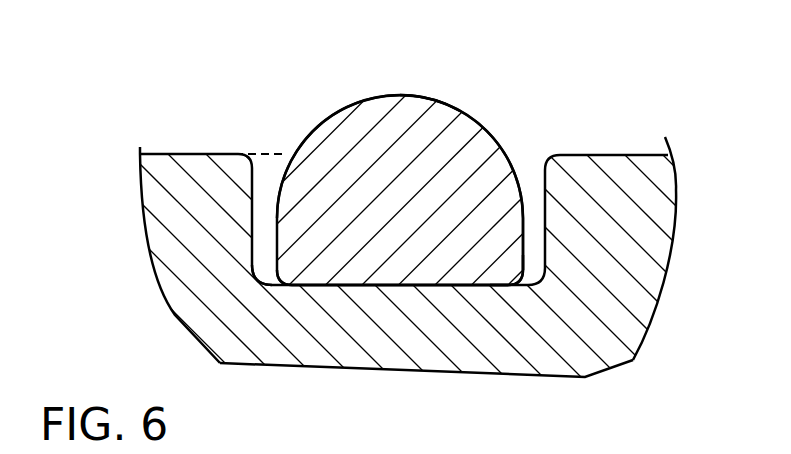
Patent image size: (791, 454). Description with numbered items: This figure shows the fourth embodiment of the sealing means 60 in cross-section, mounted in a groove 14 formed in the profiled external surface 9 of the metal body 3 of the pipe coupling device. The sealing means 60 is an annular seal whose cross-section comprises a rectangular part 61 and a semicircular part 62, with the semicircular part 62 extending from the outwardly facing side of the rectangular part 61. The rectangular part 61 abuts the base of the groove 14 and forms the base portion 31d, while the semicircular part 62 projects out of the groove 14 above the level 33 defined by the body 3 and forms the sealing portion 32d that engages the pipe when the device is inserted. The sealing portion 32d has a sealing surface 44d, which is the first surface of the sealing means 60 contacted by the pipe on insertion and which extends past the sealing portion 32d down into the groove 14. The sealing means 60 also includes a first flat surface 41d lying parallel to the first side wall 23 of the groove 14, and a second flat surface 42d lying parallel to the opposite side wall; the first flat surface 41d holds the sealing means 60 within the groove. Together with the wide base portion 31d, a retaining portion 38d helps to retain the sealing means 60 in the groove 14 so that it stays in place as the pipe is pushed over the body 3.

The body 3 is at (658, 211).
The profiled external surface 9 is at (595, 155).
The groove 14 is at (252, 284).
The first side wall 23 is at (249, 190).
The level 33 is at (270, 153).
The base portion 31d is at (405, 275).
The sealing portion 32d is at (372, 128).
The retaining portion 38d is at (291, 136).
The first flat surface 41d is at (277, 236).
The second flat surface 42d is at (523, 222).
The sealing surface 44d is at (347, 107).
The sealing means 60 is at (460, 168).
The rectangular part 61 is at (473, 248).
The semicircular part 62 is at (430, 97).